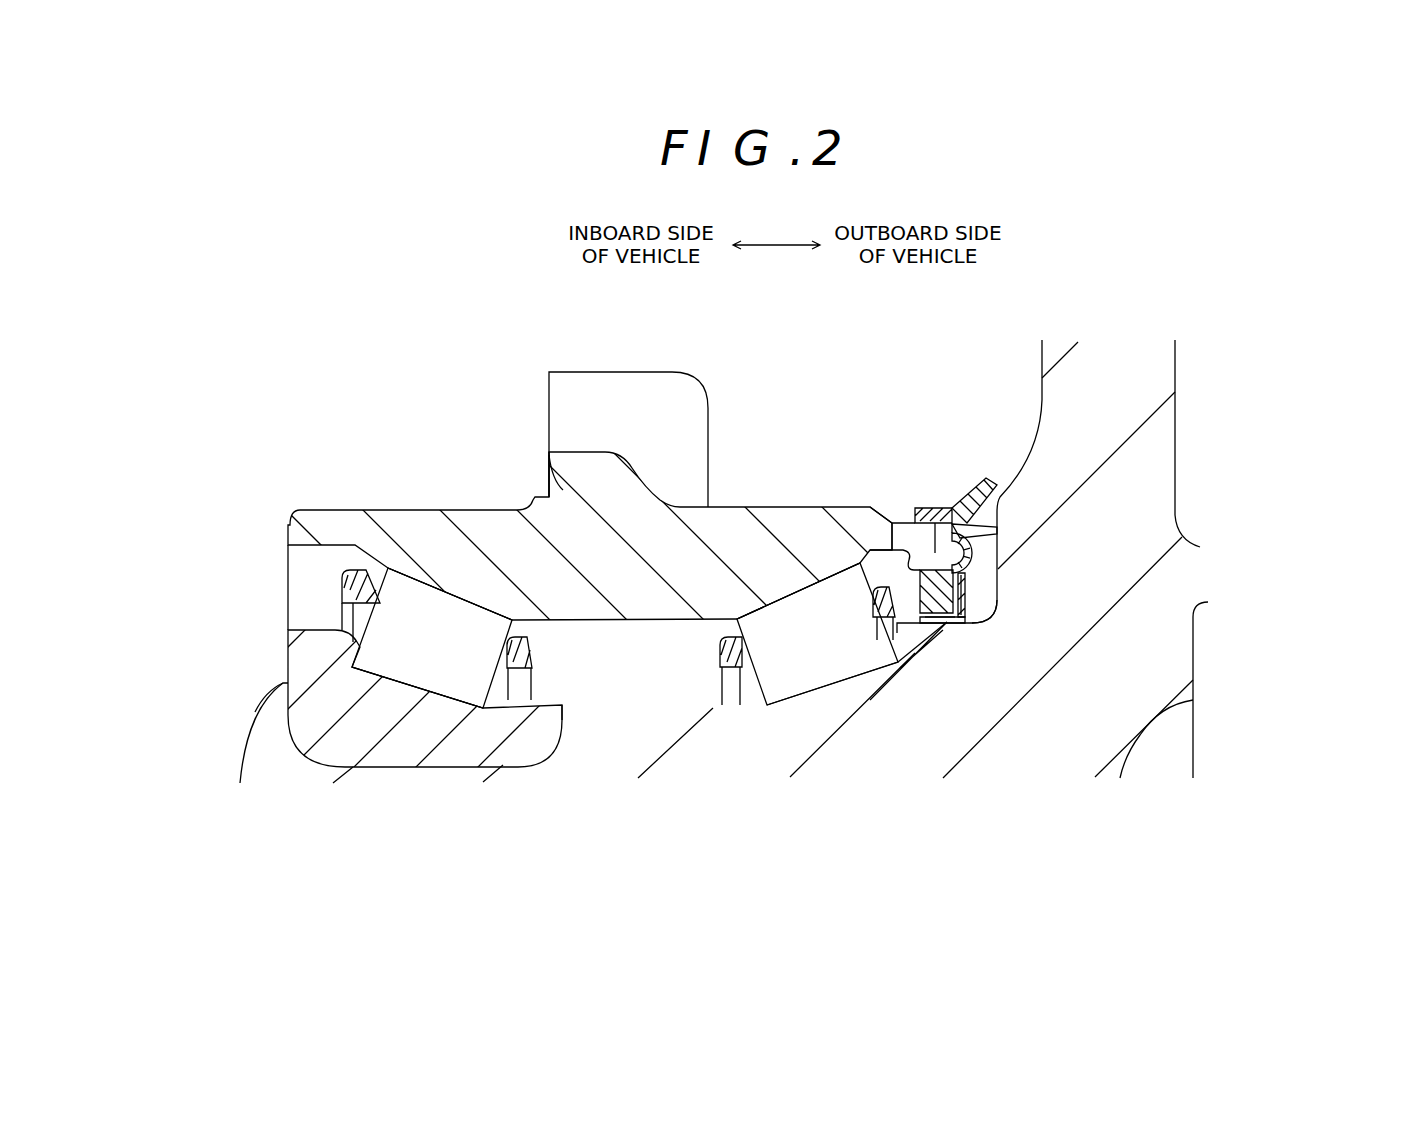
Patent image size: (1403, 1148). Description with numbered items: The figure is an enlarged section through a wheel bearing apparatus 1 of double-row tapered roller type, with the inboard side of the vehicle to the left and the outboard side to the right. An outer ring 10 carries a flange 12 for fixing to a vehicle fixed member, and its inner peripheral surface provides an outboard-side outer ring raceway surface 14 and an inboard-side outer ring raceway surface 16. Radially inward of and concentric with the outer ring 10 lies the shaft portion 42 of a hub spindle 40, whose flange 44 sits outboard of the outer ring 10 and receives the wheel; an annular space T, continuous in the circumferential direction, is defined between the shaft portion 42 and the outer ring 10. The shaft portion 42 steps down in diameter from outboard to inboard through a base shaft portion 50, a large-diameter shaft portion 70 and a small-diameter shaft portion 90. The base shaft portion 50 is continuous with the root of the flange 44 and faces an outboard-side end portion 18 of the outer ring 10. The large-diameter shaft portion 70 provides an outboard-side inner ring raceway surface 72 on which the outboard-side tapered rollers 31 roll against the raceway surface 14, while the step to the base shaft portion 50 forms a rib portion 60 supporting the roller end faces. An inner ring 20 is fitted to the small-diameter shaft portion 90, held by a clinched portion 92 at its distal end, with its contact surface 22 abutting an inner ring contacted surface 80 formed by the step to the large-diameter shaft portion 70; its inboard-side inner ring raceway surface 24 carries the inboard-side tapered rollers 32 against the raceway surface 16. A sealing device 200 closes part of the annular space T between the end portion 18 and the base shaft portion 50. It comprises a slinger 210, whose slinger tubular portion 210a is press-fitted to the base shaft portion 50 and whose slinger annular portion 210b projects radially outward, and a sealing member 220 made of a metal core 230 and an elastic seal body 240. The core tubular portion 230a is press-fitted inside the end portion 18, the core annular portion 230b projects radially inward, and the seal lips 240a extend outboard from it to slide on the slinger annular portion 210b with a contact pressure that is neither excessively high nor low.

The wheel bearing apparatus 1 is at (354, 357).
The outer ring 10 is at (314, 528).
The flange 12 is at (586, 468).
The outboard-side outer ring raceway surface 14 is at (800, 600).
The inboard-side outer ring raceway surface 16 is at (450, 600).
The outboard-side end portion 18 is at (908, 608).
The inner ring 20 is at (310, 668).
The contact surface 22 is at (562, 713).
The inboard-side inner ring raceway surface 24 is at (437, 676).
The outboard-side tapered rollers 31 is at (836, 600).
The inboard-side tapered rollers 32 is at (407, 600).
The hub spindle 40 is at (1165, 677).
The shaft portion 42 is at (657, 738).
The flange 44 is at (1140, 368).
The base shaft portion 50 is at (902, 512).
The rib portion 60 is at (878, 662).
The large-diameter shaft portion 70 is at (697, 699).
The outboard-side inner ring raceway surface 72 is at (877, 658).
The inner ring contacted surface 80 is at (522, 700).
The small-diameter shaft portion 90 is at (383, 749).
The clinched portion 92 is at (270, 722).
The sealing device 200 is at (1315, 463).
The slinger 210 is at (968, 575).
The slinger tubular portion 210a is at (942, 626).
The slinger annular portion 210b is at (966, 578).
The sealing member 220 is at (1253, 443).
The core 230 is at (966, 553).
The core tubular portion 230a is at (940, 507).
The core annular portion 230b is at (923, 630).
The seal body 240 is at (980, 511).
The seal lips 240a is at (984, 606).
The annular space T is at (587, 624).